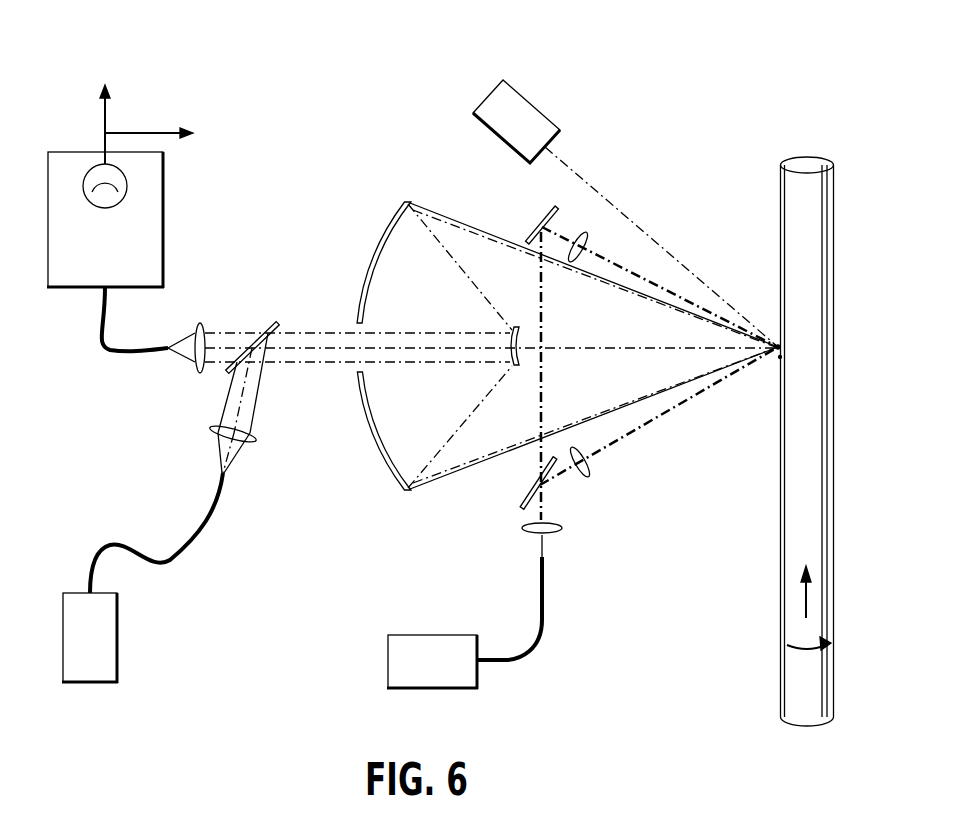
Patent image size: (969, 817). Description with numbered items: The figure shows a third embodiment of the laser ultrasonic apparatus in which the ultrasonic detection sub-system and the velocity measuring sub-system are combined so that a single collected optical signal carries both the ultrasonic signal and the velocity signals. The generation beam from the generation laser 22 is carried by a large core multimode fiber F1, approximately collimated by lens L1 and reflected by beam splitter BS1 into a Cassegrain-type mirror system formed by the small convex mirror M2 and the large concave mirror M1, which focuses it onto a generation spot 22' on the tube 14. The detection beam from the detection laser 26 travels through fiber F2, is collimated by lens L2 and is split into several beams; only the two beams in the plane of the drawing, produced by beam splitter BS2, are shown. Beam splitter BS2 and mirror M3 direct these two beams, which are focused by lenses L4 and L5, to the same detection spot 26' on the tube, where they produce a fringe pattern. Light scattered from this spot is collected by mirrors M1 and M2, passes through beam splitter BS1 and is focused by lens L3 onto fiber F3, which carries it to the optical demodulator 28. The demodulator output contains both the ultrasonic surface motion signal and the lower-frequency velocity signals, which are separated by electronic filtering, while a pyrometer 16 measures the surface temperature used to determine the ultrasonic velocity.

The tube 14 is at (825, 181).
The pyrometer 16 is at (518, 93).
The generation laser 22 is at (90, 665).
The generation spot 22' is at (840, 402).
The detection laser 26 is at (432, 637).
The detection spot 26' is at (750, 296).
The optical demodulator 28 is at (163, 224).
The large core multimode fiber F1 is at (210, 506).
The large core multimode fiber F2 is at (546, 646).
The large core optical fiber F3 is at (108, 318).
The lens L1 is at (258, 436).
The lens L2 is at (562, 530).
The lens L3 is at (198, 372).
The lens L4 is at (588, 478).
The lens L5 is at (576, 230).
The beam splitter BS1 is at (268, 322).
The beam splitter BS2 is at (520, 498).
The large concave mirror M1 is at (378, 246).
The small convex mirror M2 is at (507, 347).
The small mirror M3 is at (527, 234).